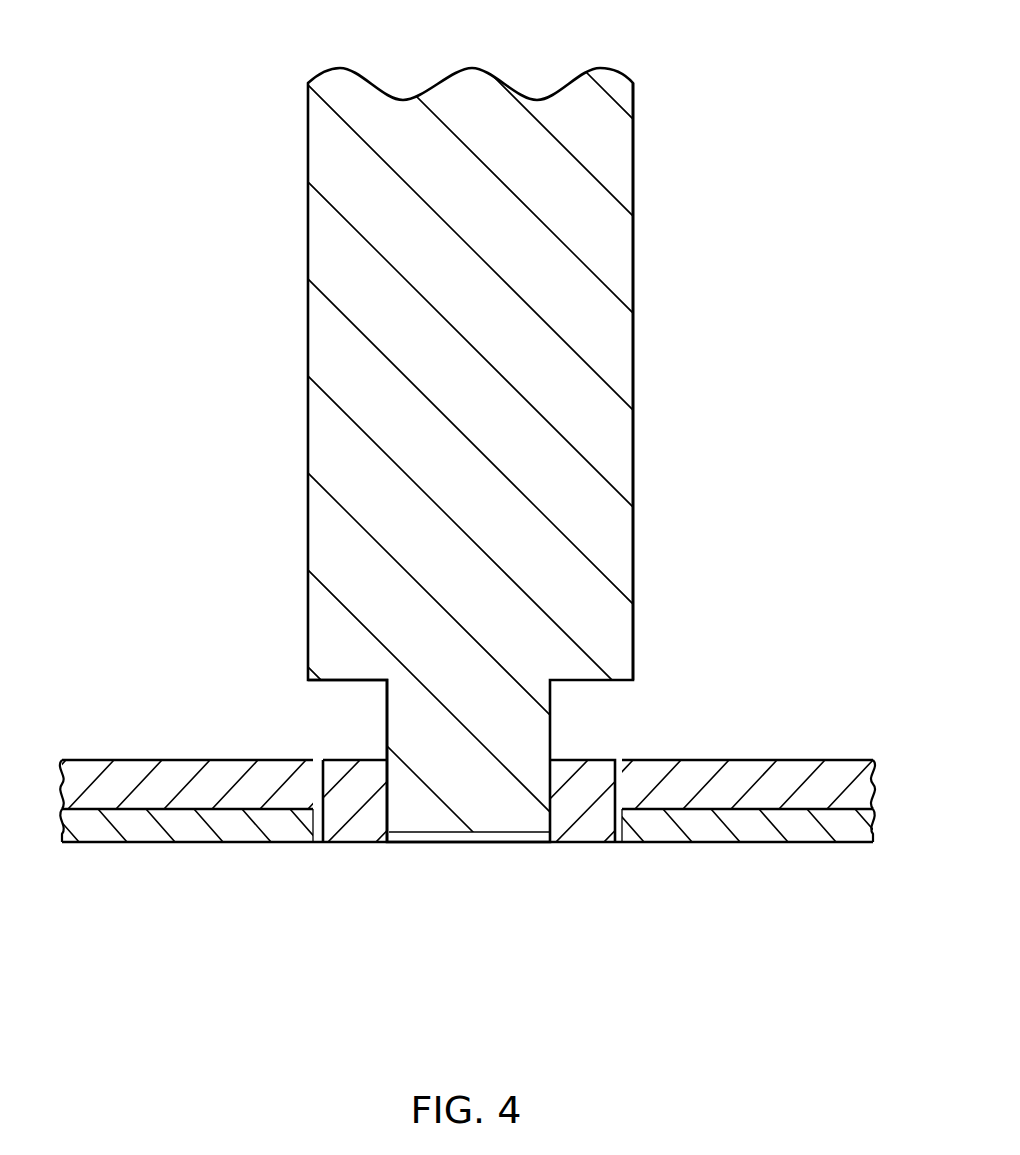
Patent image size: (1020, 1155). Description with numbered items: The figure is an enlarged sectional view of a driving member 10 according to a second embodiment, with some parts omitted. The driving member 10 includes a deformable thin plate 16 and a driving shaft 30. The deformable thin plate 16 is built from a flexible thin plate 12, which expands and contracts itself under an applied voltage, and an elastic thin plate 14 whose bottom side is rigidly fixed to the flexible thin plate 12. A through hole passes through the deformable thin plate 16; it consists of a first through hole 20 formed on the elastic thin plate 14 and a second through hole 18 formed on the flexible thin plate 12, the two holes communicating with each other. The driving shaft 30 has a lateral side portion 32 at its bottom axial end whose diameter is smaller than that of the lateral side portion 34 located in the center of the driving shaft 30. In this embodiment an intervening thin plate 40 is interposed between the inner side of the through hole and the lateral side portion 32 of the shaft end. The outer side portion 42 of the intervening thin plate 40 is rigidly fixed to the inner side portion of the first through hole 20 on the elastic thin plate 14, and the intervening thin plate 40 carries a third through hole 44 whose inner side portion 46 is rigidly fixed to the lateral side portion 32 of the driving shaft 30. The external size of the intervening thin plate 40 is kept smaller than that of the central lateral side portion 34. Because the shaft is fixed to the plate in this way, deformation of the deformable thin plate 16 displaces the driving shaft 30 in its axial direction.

The driving member 10 is at (237, 115).
The flexible thin plate 12 is at (707, 828).
The elastic thin plate 14 is at (650, 787).
The deformable thin plate 16 is at (672, 930).
The second through hole 18 is at (315, 832).
The first through hole 20 is at (329, 820).
The driving shaft 30 is at (323, 517).
The lateral side portion of the bottom axial end of the driving shaft 32 is at (385, 758).
The lateral side portion in the center of the driving shaft 34 is at (633, 507).
The intervening thin plate 40 is at (592, 770).
The outer side portion of the intervening thin plate 42 is at (618, 790).
The third through hole 44 is at (460, 834).
The inner side portion of the third through hole 46 is at (390, 812).